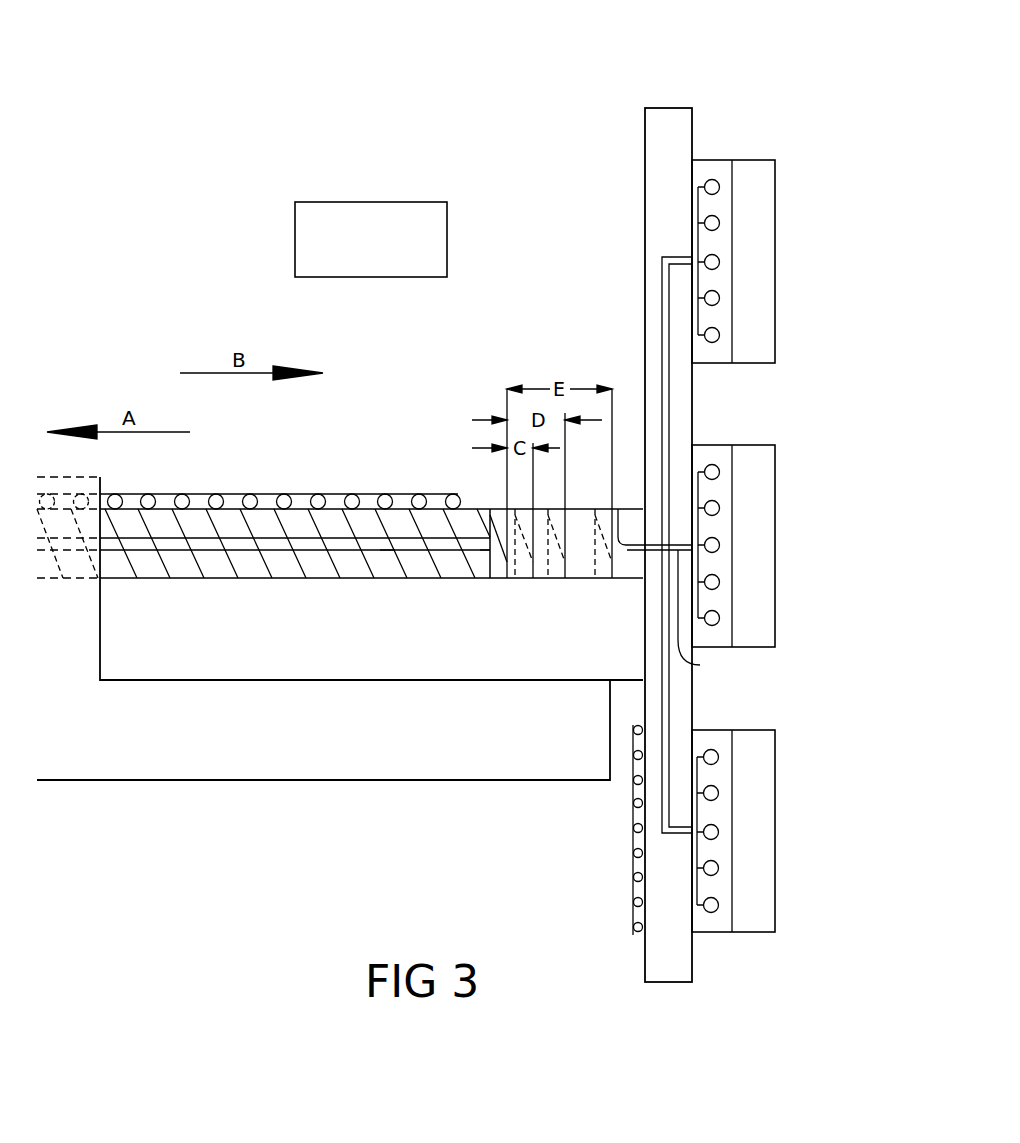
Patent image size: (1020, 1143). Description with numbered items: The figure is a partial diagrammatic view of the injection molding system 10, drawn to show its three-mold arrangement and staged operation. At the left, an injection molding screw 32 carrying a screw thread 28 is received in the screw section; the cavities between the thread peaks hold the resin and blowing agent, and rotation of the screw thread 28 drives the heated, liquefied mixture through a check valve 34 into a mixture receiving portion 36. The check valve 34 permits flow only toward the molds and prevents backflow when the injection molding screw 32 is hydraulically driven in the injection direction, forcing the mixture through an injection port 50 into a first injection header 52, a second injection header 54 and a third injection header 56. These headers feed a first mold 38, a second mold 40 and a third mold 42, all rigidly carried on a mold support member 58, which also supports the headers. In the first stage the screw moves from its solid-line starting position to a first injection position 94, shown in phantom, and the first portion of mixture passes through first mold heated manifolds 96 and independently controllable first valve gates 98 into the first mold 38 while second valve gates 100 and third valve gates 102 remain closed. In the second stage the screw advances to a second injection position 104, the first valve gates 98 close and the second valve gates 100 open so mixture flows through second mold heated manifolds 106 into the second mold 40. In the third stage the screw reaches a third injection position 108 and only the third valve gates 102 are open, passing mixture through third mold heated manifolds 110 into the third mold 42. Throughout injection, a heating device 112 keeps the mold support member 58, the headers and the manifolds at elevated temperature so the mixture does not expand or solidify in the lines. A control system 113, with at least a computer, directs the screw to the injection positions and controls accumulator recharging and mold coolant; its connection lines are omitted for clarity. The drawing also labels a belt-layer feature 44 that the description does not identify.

The injection molding system 10 is at (591, 85).
The screw thread 28 is at (378, 527).
The injection molding screw 32 is at (500, 572).
The check valve 34 is at (497, 535).
The mixture receiving portion 36 is at (630, 567).
The first mold 38 is at (750, 823).
The second mold 40 is at (762, 477).
The third mold 42 is at (758, 260).
The belt intermediate layer 44 is at (388, 552).
The injection port 50 is at (620, 512).
The first injection header 52 is at (668, 693).
The second injection header 54 is at (700, 665).
The third injection header 56 is at (667, 400).
The mold support member 58 is at (655, 245).
The first injection position 94 is at (522, 580).
The first mold heated manifolds 96 is at (697, 813).
The first valve gates 98 is at (718, 757).
The second valve gates 100 is at (720, 472).
The third valve gates 102 is at (720, 187).
The second injection position 104 is at (553, 580).
The second mold heated manifolds 106 is at (698, 570).
The third injection position 108 is at (602, 580).
The third mold heated manifolds 110 is at (698, 240).
The heating device 112 is at (636, 853).
The control system 113 is at (352, 202).